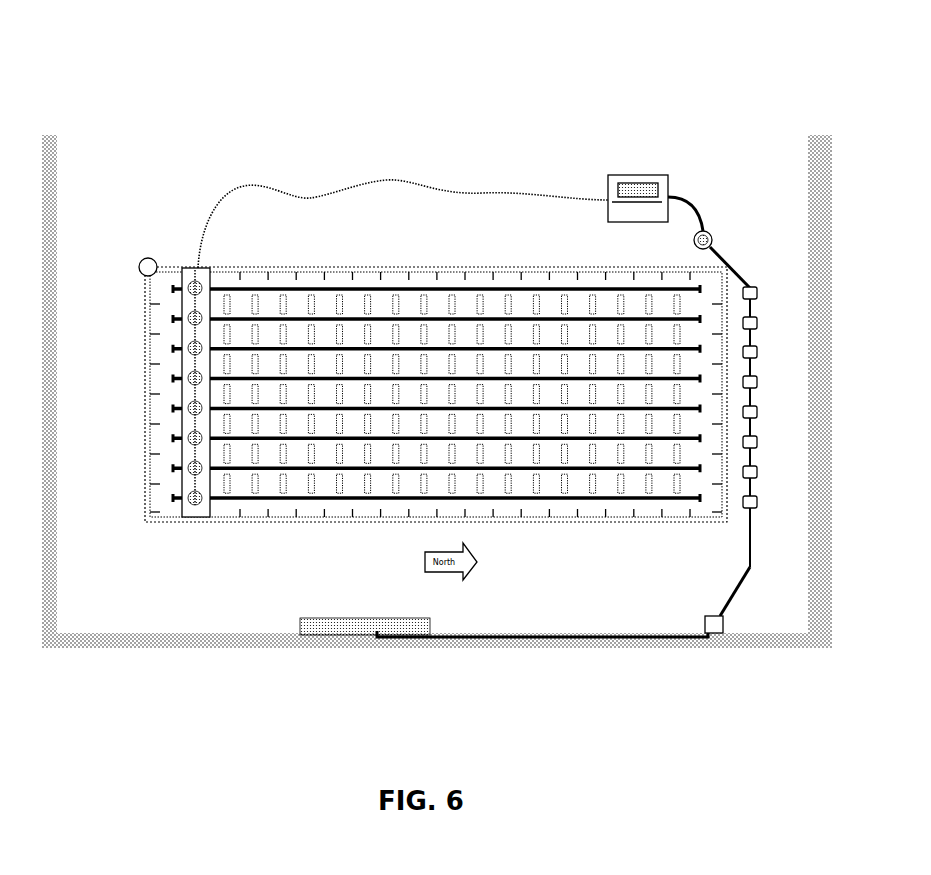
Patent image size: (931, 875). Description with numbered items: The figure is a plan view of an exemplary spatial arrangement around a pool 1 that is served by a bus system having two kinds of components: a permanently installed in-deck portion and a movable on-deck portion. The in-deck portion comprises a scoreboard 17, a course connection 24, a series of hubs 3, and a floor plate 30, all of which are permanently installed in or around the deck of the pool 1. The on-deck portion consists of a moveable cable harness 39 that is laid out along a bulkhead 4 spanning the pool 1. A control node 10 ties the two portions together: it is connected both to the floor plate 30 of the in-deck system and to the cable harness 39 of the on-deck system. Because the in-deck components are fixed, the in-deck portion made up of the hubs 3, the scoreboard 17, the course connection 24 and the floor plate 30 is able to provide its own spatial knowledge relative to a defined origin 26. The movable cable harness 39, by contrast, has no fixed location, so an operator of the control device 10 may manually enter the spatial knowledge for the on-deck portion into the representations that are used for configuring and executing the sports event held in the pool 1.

The pool 1 is at (437, 390).
The hubs 3 is at (750, 286).
The bulkhead 4 is at (193, 363).
The control node 10 is at (638, 187).
The scoreboard 17 is at (339, 625).
The course connection 24 is at (712, 625).
The origin 26 is at (146, 258).
The floor plate 30 is at (704, 231).
The cable harness 39 is at (486, 190).